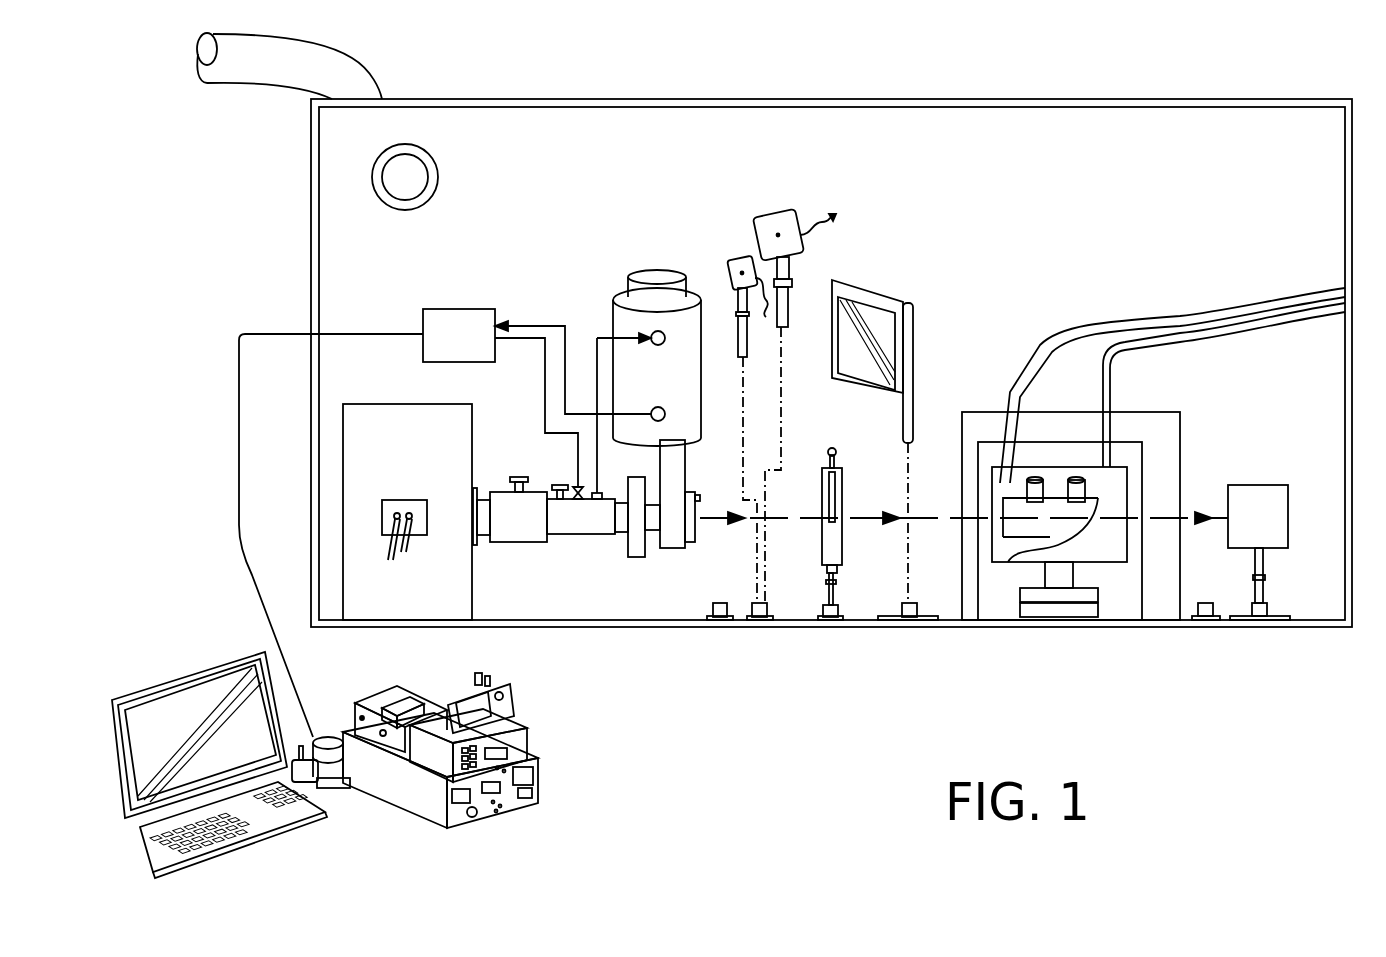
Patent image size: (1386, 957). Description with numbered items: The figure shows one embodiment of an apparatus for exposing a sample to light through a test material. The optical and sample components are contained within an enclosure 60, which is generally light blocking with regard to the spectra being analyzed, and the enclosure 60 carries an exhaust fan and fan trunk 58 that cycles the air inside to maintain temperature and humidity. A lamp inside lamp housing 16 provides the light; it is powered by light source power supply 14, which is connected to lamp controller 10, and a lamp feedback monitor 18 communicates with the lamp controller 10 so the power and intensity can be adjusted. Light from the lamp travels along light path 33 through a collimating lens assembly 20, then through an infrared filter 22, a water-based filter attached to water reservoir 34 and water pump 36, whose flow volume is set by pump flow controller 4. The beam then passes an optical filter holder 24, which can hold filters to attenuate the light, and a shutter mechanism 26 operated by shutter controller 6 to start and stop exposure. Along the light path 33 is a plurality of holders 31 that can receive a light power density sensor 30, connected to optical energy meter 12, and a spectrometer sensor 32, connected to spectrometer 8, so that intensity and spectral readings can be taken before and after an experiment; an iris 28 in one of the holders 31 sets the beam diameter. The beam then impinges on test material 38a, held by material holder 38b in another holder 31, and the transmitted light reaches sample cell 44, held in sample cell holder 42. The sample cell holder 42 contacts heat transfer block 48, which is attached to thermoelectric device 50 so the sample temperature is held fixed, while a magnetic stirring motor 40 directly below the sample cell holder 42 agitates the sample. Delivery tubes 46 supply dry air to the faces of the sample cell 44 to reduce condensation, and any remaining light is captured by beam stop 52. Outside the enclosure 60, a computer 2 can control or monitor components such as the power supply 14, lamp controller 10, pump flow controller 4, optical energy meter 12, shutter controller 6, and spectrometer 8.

The computer 2 is at (302, 842).
The pump flow controller 4 is at (340, 790).
The shutter controller 6 is at (368, 700).
The spectrometer 8 is at (400, 695).
The lamp controller 10 is at (520, 723).
The optical energy meter 12 is at (498, 683).
The light source power supply 14 is at (512, 805).
The lamp housing 16 is at (383, 404).
The lamp feedback monitor 18 is at (395, 500).
The collimating lens assembly 20 is at (518, 542).
The infrared filter 22 is at (580, 534).
The optical filter holder 24 is at (637, 557).
The shutter mechanism 26 is at (688, 473).
The iris 28 is at (840, 473).
The light power density sensor 30 is at (735, 260).
The holders 31 is at (722, 618).
The spectrometer sensor 32 is at (763, 214).
The light path 33 is at (862, 520).
The water reservoir 34 is at (613, 312).
The water pump 36 is at (440, 309).
The test material 38a is at (863, 353).
The material holder 38b is at (913, 330).
The magnetic stirring motor 40 is at (1043, 597).
The sample cell holder 42 is at (1112, 568).
The sample cell 44 is at (995, 483).
The delivery tubes 46 is at (1027, 362).
The heat transfer block 48 is at (1142, 460).
The thermoelectric device 50 is at (1180, 412).
The beam stop 52 is at (1260, 485).
The exhaust fan and fan trunk 58 is at (376, 160).
The enclosure 60 is at (583, 99).